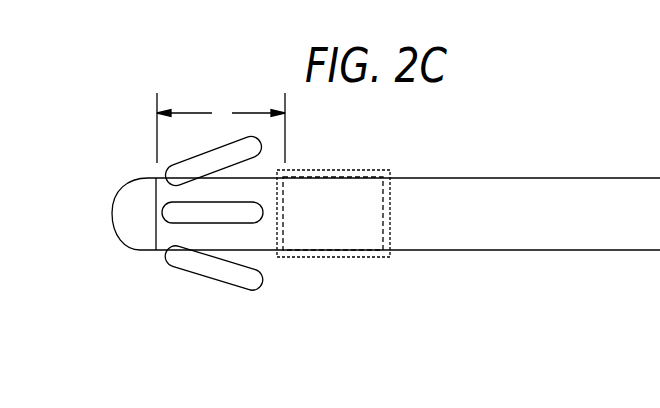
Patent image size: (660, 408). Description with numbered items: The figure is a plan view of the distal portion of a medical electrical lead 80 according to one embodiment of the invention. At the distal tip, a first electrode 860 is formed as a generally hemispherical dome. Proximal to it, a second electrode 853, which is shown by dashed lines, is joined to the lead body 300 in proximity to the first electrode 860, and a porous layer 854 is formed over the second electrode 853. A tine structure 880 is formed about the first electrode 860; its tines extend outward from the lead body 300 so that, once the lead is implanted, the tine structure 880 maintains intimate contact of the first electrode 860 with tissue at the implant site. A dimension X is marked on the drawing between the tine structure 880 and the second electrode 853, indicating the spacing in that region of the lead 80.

The lead 80 is at (499, 126).
The lead body 300 is at (542, 233).
The second electrode 853 is at (313, 188).
The porous layer 854 is at (337, 253).
The first electrode 860 is at (132, 218).
The tine structure 880 is at (203, 162).
The finger length dimension X is at (221, 128).